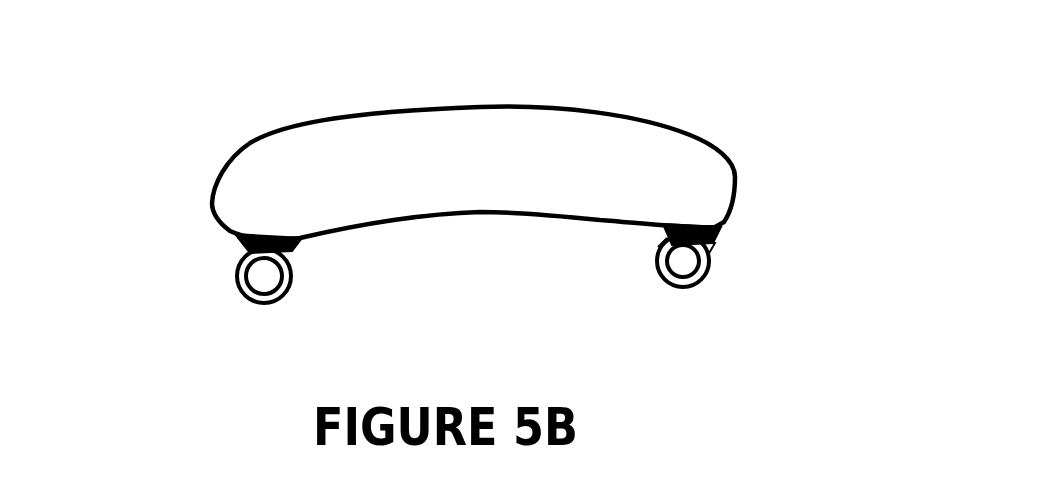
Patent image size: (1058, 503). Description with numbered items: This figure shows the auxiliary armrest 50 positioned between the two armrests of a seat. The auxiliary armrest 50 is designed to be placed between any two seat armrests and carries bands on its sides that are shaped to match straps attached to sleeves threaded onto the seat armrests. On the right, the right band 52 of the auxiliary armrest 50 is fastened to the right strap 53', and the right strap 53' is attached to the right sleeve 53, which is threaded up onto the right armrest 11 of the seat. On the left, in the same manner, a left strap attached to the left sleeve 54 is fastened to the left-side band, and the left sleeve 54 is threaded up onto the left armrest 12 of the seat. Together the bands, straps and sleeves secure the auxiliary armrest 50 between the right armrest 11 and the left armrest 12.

The auxiliary armrest 50 is at (488, 137).
The left sleeve 54 is at (233, 268).
The left armrest 12 is at (263, 273).
The right band 52 is at (715, 230).
The right sleeve 53 is at (795, 220).
The right strap 53' is at (579, 275).
The right armrest 11 is at (680, 265).